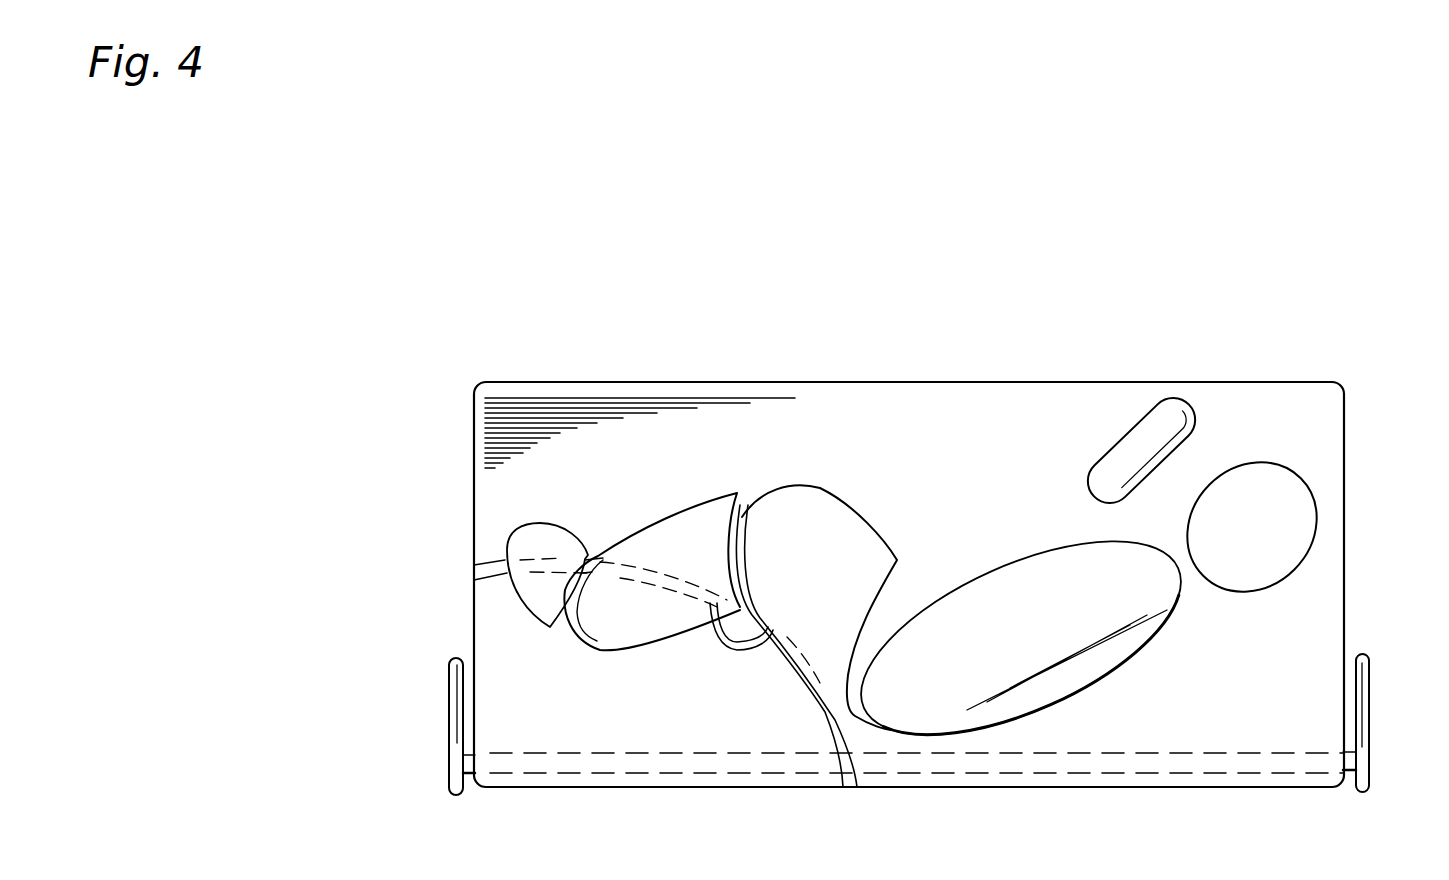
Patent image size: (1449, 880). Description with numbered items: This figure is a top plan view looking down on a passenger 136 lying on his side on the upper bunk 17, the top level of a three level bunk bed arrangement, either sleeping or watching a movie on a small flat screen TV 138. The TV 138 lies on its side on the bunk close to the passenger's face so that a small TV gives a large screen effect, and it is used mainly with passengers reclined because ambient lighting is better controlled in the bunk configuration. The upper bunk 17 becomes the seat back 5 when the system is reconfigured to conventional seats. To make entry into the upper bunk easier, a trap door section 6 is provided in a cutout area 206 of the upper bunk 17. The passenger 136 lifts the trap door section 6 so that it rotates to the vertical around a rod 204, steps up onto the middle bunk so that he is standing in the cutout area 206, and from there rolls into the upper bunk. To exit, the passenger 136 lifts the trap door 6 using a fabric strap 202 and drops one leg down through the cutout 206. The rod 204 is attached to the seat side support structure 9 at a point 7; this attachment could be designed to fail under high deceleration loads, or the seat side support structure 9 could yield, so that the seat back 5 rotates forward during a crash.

The seat back 5 is at (811, 417).
The trap door section 6 is at (632, 698).
The attachment point 7 is at (455, 763).
The seat side support structure 9 is at (447, 692).
The upper bunk 17 is at (1313, 452).
The passenger 136 is at (1027, 553).
The small flat screen TV 138 is at (1183, 412).
The fabric strap 202 is at (726, 648).
The rod 204 is at (705, 763).
The cutout area 206 is at (550, 715).